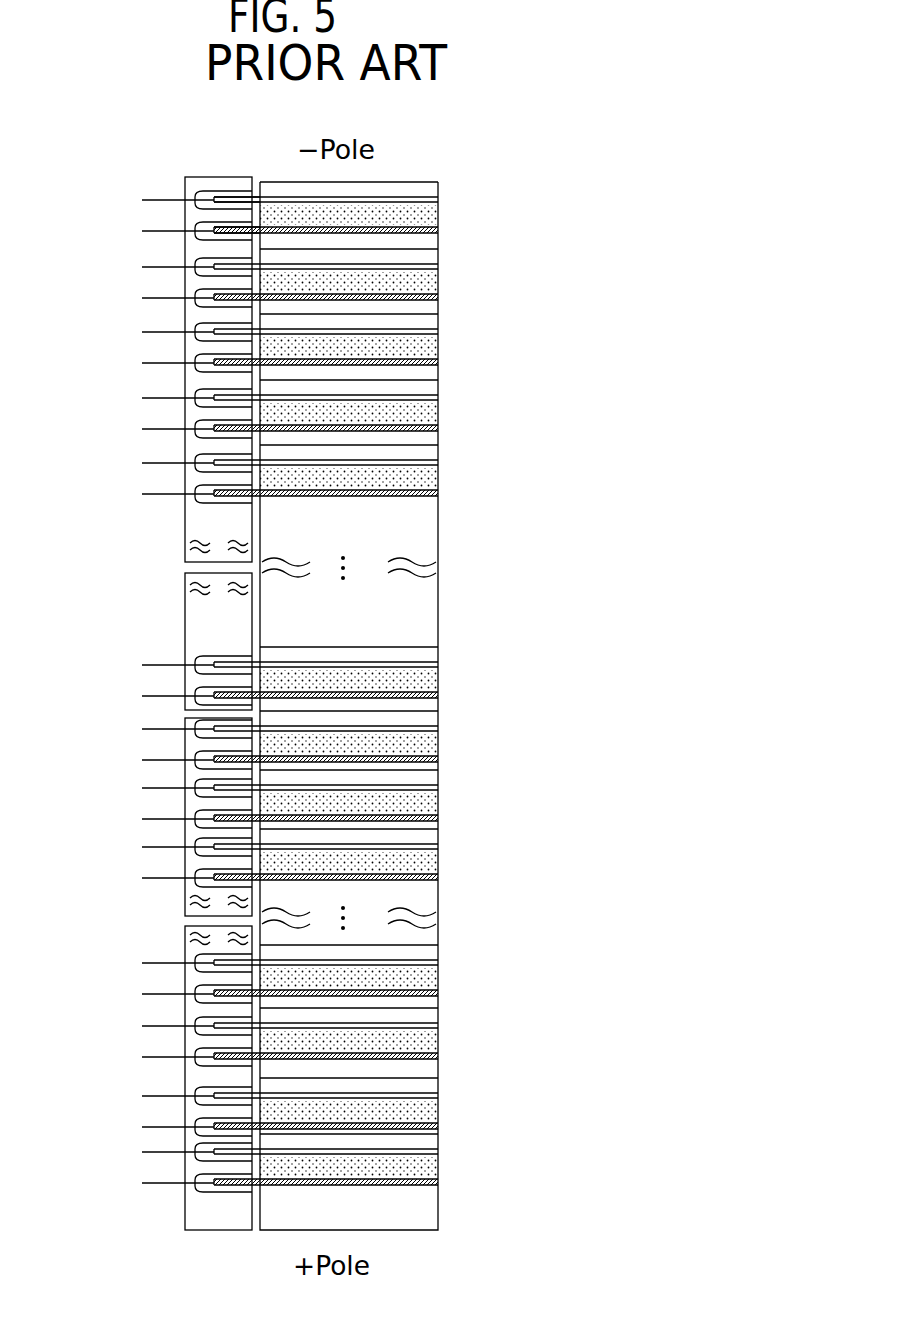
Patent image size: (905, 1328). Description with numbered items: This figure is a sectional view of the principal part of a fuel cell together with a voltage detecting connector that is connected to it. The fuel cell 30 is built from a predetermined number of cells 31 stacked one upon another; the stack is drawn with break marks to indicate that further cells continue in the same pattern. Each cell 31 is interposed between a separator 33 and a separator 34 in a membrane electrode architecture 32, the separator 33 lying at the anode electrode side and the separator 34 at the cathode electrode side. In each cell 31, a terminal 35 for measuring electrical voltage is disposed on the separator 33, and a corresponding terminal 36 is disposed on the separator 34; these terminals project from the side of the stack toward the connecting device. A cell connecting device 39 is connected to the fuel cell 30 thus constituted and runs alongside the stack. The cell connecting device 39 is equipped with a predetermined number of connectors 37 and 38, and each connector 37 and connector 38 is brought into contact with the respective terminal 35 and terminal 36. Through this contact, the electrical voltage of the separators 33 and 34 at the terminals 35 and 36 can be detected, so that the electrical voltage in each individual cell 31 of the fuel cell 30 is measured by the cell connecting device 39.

The fuel cell 30 is at (499, 106).
The cell 31 is at (324, 663).
The membrane electrode architecture 32 is at (440, 217).
The separator 33 is at (440, 182).
The separator 34 is at (440, 233).
The terminal 35 is at (258, 206).
The terminal 36 is at (241, 216).
The connector 37 is at (157, 196).
The connector 38 is at (160, 232).
The cell connecting device 39 is at (203, 164).